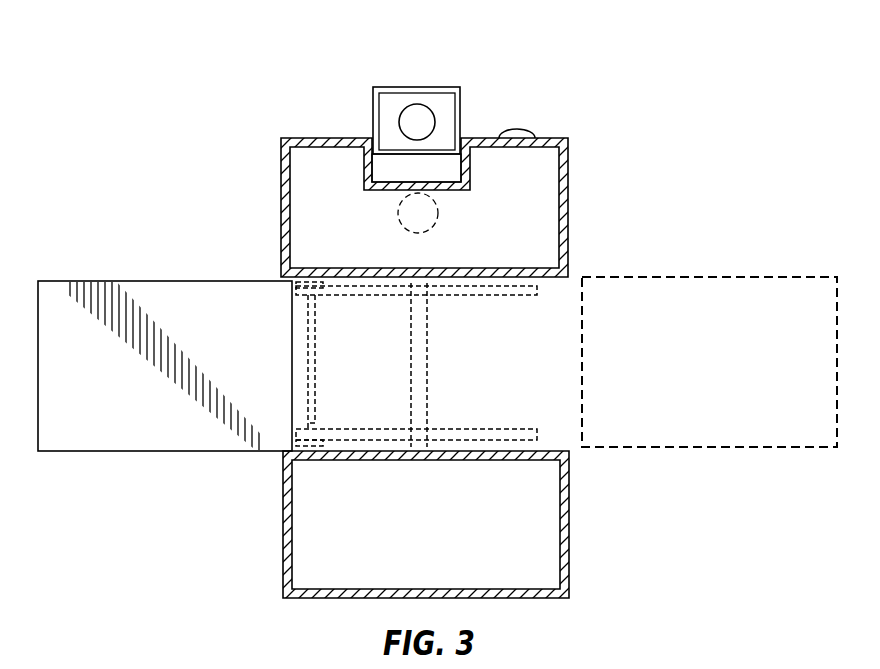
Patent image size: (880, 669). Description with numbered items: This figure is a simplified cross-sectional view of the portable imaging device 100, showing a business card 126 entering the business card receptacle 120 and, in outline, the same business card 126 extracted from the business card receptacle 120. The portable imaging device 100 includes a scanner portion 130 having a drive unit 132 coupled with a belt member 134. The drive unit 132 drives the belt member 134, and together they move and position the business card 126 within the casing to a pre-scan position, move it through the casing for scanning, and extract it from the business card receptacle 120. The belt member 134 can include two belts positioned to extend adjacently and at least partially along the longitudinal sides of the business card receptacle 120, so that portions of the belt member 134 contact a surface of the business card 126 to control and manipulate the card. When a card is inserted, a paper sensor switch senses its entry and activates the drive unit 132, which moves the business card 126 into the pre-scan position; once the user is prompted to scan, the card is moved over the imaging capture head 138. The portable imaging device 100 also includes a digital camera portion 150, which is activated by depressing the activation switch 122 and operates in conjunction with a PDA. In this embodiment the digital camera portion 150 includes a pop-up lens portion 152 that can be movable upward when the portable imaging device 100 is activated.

The portable imaging device 100 is at (635, 546).
The business card receptacle 120 is at (550, 445).
The activation switch 122 is at (519, 130).
The business card 126 is at (138, 288).
The scanner portion 130 is at (258, 462).
The drive unit 132 is at (320, 297).
The belt member 134 is at (369, 284).
The imaging capture head 138 is at (420, 337).
The digital camera portion 150 is at (594, 147).
The pop-up lens portion 152 is at (418, 103).